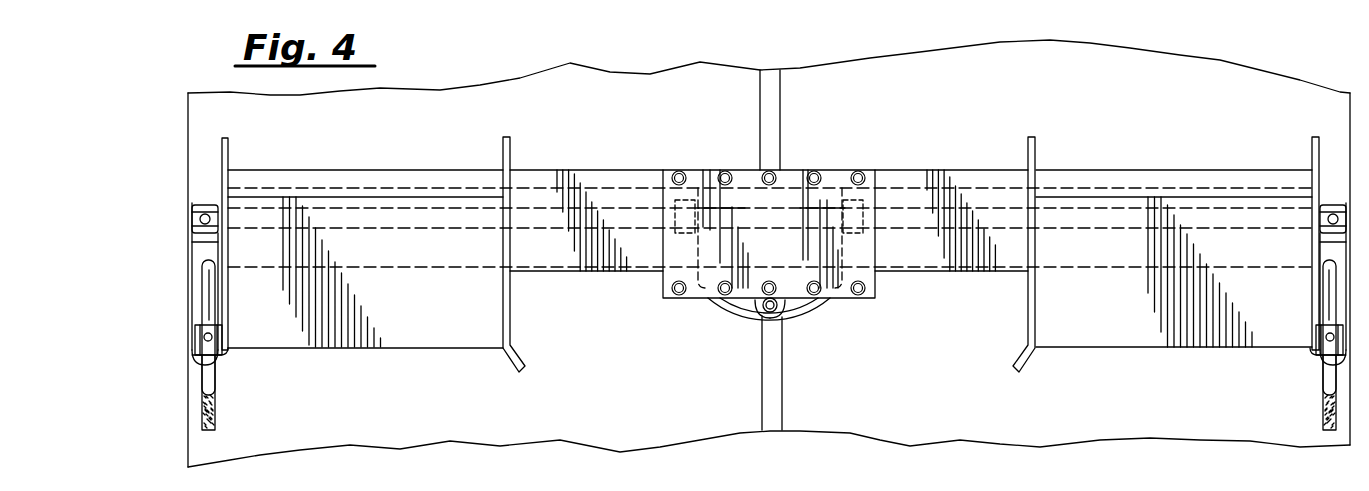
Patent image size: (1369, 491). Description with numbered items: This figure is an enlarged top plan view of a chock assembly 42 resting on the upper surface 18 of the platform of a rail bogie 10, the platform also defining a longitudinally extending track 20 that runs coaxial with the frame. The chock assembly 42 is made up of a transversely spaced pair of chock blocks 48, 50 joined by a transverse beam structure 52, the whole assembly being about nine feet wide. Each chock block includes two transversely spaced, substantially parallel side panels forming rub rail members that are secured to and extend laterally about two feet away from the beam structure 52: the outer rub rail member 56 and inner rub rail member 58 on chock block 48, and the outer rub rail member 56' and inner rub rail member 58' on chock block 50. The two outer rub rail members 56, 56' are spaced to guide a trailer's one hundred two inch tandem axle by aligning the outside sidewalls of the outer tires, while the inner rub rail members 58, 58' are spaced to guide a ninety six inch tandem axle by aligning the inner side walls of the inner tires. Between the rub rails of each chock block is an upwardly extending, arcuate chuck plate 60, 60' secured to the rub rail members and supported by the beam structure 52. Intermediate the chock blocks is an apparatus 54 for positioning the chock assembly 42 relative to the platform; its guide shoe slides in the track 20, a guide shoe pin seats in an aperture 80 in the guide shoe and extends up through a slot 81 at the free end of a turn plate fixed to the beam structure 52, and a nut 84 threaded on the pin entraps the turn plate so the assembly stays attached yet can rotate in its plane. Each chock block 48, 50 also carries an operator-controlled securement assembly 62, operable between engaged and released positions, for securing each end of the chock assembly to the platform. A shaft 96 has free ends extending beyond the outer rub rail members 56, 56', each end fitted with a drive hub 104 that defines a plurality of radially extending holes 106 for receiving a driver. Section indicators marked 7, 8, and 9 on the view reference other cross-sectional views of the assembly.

The section line 7- 7 is at (644, 243).
The section line 8- 8 is at (768, 95).
The section line 9- 9 is at (570, 157).
The rail bogie 10 is at (1088, 160).
The upper surface 18 is at (612, 423).
The longitudinally extending track 20 is at (762, 402).
The chock assembly 42 is at (900, 168).
The chock block 48 is at (394, 168).
The chock block 50 is at (1108, 168).
The transverse beam structure 52 is at (597, 168).
The positioning apparatus 54 is at (712, 309).
The outer rub rail member 56 is at (249, 225).
The outer rub rail member 56' is at (1270, 231).
The inner rub rail member 58 is at (495, 236).
The inner rub rail member 58' is at (1011, 236).
The chuck plate 60 is at (365, 272).
The chuck plate 60' is at (1174, 272).
The operator-controlled securement assembly 62 is at (185, 347).
The aperture 80 is at (810, 305).
The slot 81 is at (745, 303).
The nut 84 is at (778, 320).
The shaft 96 is at (262, 207).
The drive hub 104 is at (193, 212).
The holes 106 is at (200, 204).